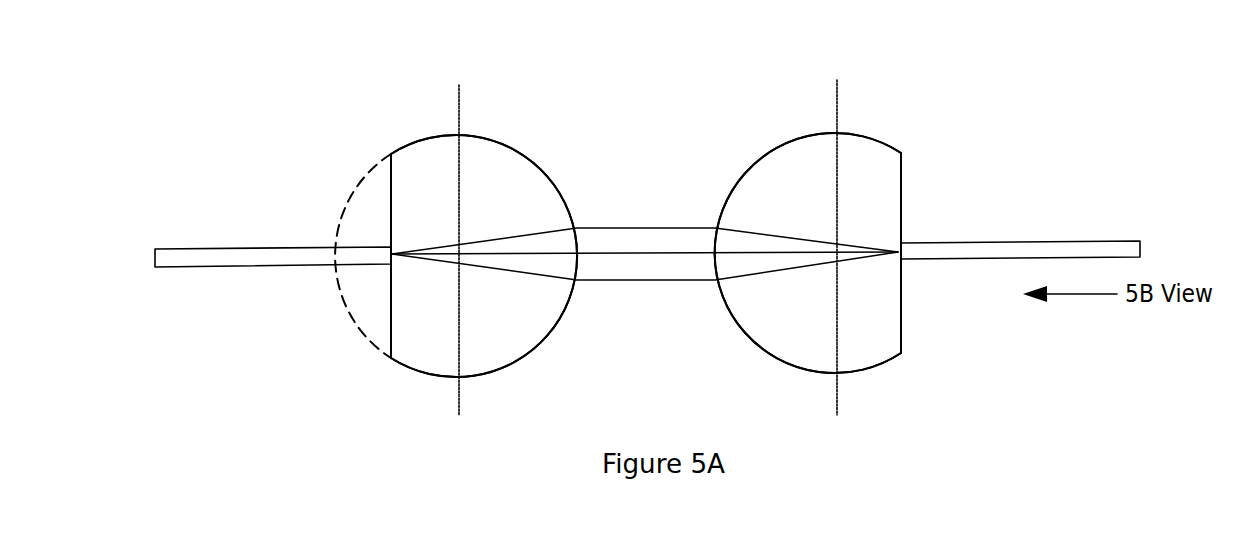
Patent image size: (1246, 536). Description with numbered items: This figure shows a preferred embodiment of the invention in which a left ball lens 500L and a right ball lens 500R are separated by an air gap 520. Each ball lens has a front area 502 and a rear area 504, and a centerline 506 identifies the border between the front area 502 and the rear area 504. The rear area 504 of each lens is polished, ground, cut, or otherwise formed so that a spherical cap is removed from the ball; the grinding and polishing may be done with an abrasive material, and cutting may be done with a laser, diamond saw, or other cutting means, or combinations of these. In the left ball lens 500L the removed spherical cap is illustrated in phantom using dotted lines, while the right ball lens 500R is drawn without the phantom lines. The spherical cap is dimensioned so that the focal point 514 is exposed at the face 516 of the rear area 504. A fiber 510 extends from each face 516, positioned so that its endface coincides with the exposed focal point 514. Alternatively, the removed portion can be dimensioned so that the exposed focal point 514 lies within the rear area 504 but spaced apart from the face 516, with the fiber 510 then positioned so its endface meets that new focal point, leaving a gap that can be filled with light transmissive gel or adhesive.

The left ball lens 500L is at (410, 378).
The right ball lens 500R is at (880, 375).
The front area 502 is at (772, 170).
The rear area 504 is at (418, 168).
The centerline 506 is at (456, 110).
The fiber 510 is at (193, 247).
The focal point 514 is at (394, 251).
The face 516 is at (390, 313).
The air gap 520 is at (641, 287).